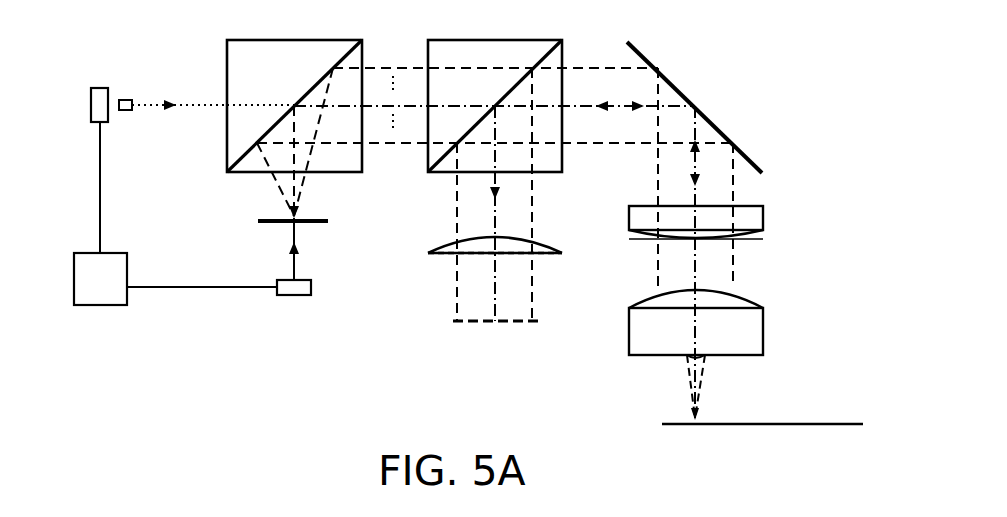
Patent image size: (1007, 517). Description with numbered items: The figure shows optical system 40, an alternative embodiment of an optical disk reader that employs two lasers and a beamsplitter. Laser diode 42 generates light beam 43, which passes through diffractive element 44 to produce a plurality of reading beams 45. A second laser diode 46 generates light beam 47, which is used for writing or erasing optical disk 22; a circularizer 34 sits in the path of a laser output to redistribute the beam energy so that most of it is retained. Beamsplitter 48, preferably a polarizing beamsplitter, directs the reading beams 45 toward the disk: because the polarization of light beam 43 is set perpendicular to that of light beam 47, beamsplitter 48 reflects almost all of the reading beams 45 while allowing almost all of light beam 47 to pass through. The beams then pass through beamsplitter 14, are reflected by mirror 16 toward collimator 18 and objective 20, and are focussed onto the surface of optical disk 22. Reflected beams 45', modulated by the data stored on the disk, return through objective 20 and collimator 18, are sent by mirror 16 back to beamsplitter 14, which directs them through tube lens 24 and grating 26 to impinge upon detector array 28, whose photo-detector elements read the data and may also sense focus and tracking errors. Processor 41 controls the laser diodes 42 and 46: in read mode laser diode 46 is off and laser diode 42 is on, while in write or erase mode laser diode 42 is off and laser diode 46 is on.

The beamsplitter 14 is at (493, 40).
The mirror 16 is at (645, 55).
The collimator 18 is at (763, 222).
The objective 20 is at (763, 330).
The optical disk 22 is at (748, 426).
The tube lens 24 is at (448, 240).
The grating 26 is at (547, 260).
The detector array 28 is at (533, 327).
The circularizer 34 is at (122, 98).
The optical system 40 is at (800, 53).
The processor 41 is at (102, 293).
The laser diode 42 is at (293, 297).
The light beam 43 is at (302, 255).
The diffractive element 44 is at (277, 222).
The reading beams 45 is at (497, 194).
The reflected beams 45' is at (549, 215).
The laser diode 46 is at (100, 85).
The light beam 47 is at (192, 104).
The beamsplitter 48 is at (283, 40).